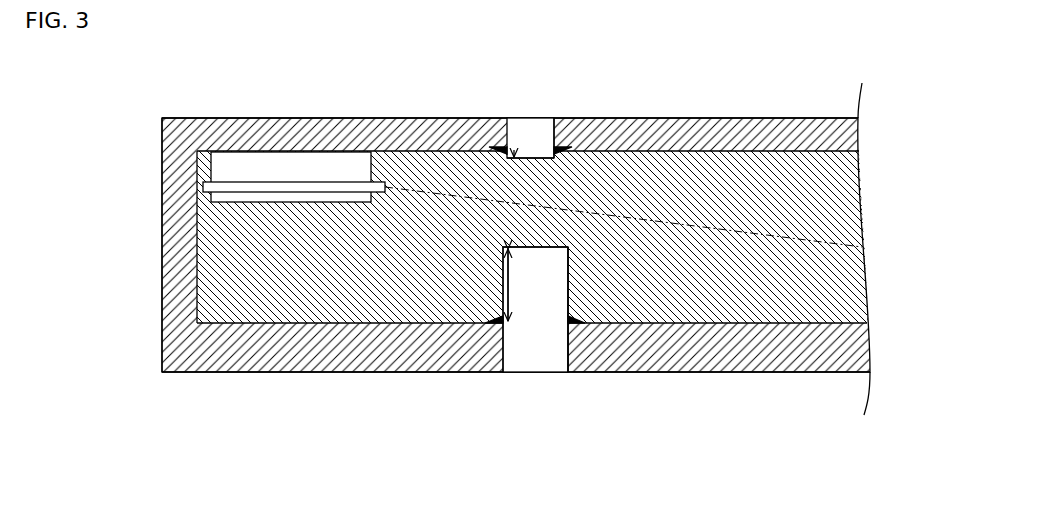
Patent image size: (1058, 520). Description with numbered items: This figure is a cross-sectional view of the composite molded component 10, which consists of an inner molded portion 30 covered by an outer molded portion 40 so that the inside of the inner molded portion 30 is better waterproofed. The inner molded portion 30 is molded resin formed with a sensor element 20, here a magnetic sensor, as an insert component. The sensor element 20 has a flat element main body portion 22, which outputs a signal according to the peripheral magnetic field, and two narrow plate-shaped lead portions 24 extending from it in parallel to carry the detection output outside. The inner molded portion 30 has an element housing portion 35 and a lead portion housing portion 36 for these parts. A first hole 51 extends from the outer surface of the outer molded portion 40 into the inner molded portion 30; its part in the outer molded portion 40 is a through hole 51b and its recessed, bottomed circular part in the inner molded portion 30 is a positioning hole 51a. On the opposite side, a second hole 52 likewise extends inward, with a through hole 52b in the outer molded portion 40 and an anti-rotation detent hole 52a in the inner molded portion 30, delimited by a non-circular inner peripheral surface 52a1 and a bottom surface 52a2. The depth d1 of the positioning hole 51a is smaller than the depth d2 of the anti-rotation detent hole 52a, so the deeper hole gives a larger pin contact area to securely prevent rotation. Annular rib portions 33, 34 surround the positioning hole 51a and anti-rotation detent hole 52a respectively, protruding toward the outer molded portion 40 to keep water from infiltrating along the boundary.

The composite molded component 10 is at (196, 98).
The sensor element 20 is at (248, 151).
The element main body portion 22 is at (305, 151).
The lead portions 24 is at (421, 183).
The inner molded portion 30 is at (743, 325).
The annular rib portion 33 is at (488, 146).
The annular rib portion 34 is at (487, 327).
The element housing portion 35 is at (165, 251).
The lead portion housing portion 36 is at (690, 151).
The outer molded portion 40 is at (774, 118).
The first hole 51 is at (618, 50).
The positioning hole 51a is at (535, 150).
The through hole 51b is at (552, 136).
The second hole 52 is at (677, 415).
The anti-rotation detent hole 52a is at (621, 397).
The inner peripheral surface 52a1 is at (565, 313).
The bottom surface 52a2 is at (553, 248).
The through hole 52b is at (503, 357).
The depth of the positioning hole d1 is at (514, 150).
The depth of the anti-rotation detent hole d2 is at (511, 298).